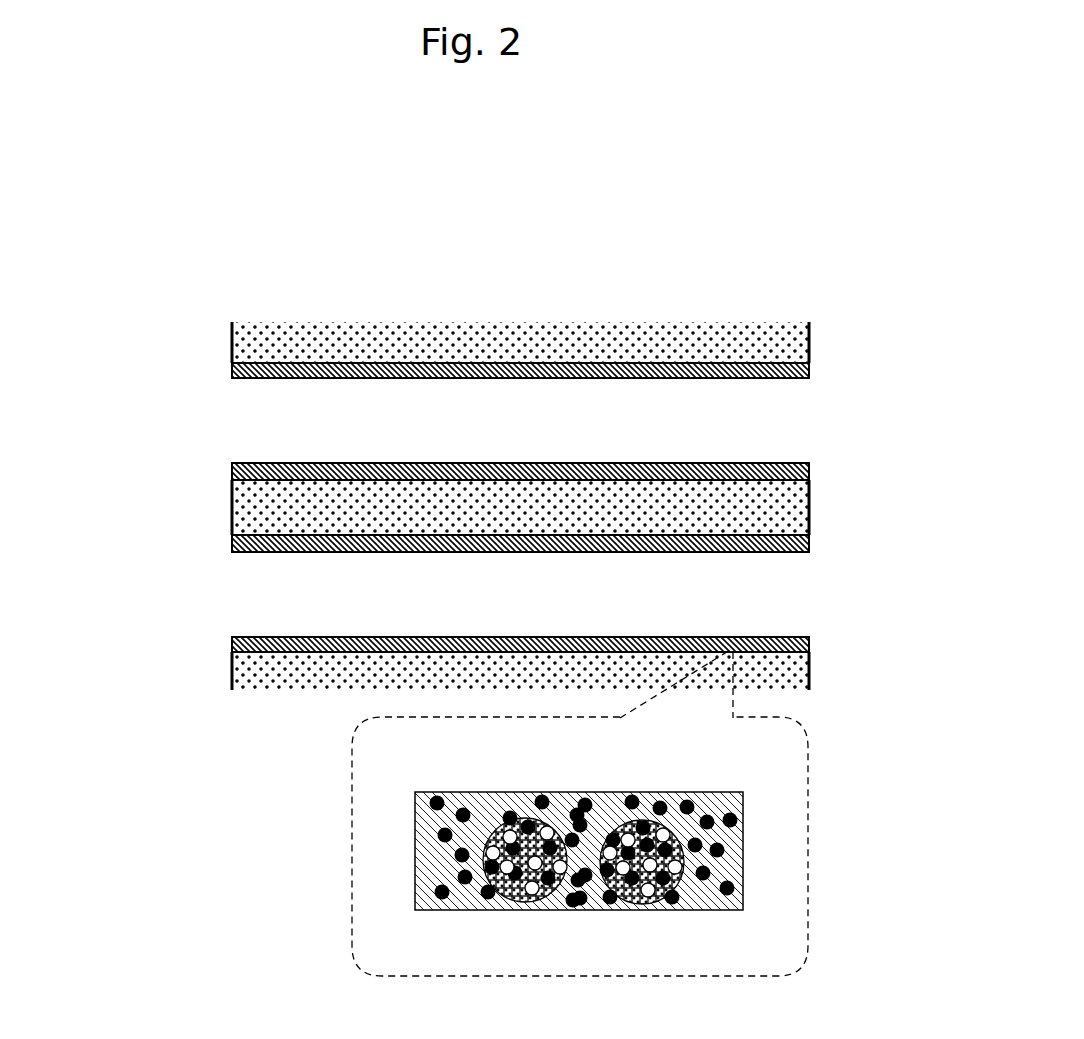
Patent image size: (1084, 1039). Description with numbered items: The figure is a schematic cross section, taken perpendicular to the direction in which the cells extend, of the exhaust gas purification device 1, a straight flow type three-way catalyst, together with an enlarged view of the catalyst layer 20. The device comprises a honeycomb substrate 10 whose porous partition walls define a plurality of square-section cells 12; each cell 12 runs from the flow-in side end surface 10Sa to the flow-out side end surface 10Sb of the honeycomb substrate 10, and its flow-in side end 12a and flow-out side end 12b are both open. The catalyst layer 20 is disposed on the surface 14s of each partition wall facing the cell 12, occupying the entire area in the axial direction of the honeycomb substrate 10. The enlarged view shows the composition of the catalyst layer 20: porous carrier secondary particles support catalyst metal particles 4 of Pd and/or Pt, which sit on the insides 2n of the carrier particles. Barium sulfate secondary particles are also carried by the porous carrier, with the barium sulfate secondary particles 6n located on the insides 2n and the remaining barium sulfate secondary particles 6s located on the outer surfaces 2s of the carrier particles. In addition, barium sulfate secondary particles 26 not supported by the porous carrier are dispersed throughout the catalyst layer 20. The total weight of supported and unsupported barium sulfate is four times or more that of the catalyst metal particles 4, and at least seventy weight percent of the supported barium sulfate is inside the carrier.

The exhaust gas purification device 1 is at (826, 252).
The honeycomb substrate 10 is at (780, 332).
The cell 12 is at (507, 434).
The flow-in side end 12a is at (232, 405).
The flow-out side end 12b is at (810, 402).
The surface of partition wall 14s is at (645, 379).
The catalyst layer 20 is at (398, 379).
The flow-in side end surface 10Sa is at (152, 491).
The flow-out side end surface 10Sb is at (850, 476).
The barium sulfate secondary particle not supported by porous carrier 26 is at (437, 838).
The catalyst metal particle 4 is at (546, 900).
The barium sulfate secondary particle supported on inside of porous carrier 6n is at (500, 833).
The barium sulfate secondary particle supported on outer surface 6s is at (490, 900).
The outer surface of porous carrier secondary particle 2s is at (482, 880).
The inside of porous carrier secondary particle 2n is at (522, 895).